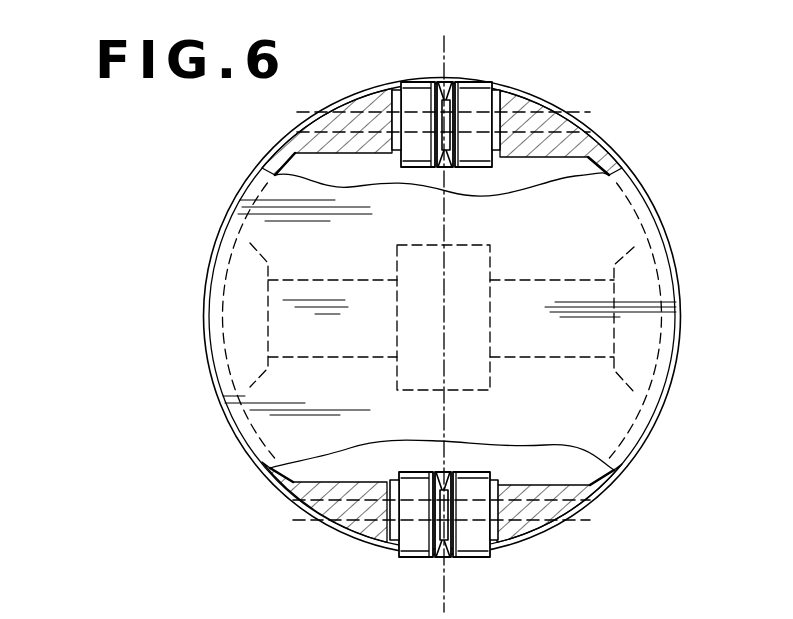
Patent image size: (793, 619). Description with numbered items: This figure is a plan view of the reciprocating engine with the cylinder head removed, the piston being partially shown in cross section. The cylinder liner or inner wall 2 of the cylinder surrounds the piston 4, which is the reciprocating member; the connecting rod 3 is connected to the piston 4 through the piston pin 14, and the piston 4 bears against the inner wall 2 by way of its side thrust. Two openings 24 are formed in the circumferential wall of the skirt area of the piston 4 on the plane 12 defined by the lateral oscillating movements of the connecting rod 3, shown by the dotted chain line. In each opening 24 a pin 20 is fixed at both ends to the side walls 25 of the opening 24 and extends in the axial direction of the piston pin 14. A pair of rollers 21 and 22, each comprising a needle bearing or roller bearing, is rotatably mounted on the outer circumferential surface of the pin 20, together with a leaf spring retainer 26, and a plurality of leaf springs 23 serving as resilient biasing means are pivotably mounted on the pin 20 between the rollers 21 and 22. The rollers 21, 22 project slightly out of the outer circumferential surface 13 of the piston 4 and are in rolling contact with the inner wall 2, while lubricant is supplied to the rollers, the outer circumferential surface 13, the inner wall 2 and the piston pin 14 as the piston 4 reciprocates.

The cylinder liner 2 is at (607, 142).
The connecting rod 3 is at (457, 240).
The piston 4 is at (613, 214).
The plane 12 is at (444, 580).
The outer circumferential surface 13 is at (222, 417).
The piston pin 14 is at (543, 282).
The pin 20 is at (560, 107).
The roller 21 is at (430, 80).
The roller 22 is at (477, 80).
The leaf spring 23 is at (453, 80).
The opening 24 is at (397, 80).
The side wall 25 is at (373, 90).
The leaf spring retainer 26 is at (436, 140).